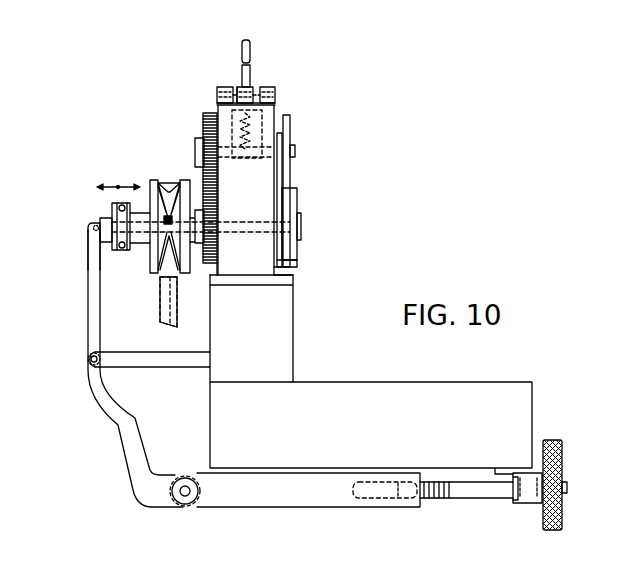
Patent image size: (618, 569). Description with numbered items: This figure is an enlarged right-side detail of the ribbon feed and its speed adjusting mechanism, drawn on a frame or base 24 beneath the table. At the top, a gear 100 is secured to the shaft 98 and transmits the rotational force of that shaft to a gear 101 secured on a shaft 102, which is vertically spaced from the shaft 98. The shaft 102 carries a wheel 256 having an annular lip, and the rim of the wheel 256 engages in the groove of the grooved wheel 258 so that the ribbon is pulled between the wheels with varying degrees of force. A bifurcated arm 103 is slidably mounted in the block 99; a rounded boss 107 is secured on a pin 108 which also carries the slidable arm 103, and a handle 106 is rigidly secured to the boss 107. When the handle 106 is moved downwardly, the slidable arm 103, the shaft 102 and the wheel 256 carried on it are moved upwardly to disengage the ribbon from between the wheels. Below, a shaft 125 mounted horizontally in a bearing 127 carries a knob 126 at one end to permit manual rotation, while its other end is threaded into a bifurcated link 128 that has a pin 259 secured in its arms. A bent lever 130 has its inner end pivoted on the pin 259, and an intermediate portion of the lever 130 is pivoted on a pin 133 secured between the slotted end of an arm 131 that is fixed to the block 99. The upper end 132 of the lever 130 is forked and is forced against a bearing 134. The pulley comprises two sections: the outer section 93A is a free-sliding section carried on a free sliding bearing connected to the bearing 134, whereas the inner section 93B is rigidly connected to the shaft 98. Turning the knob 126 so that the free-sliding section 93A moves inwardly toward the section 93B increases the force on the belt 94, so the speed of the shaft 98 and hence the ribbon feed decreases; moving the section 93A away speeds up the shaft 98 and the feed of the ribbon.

The base frame 24 is at (492, 397).
The outer section of pulley 93A is at (152, 180).
The inner section of pulley 93B is at (186, 180).
The belt 94 is at (145, 177).
The shaft 98 is at (301, 228).
The block 99 is at (255, 272).
The gear 100 is at (205, 266).
The gear 101 is at (208, 113).
The shaft 102 is at (295, 153).
The bifurcated arm 103 is at (275, 98).
The handle 106 is at (250, 52).
The rounded boss 107 is at (255, 85).
The pin 108 is at (235, 87).
The shaft 125 is at (472, 490).
The knob 126 is at (562, 522).
The bearing 127 is at (513, 504).
The bifurcated link 128 is at (280, 498).
The bent lever 130 is at (108, 392).
The arm 131 is at (168, 368).
The forked upper end of lever 132 is at (88, 238).
The pin 133 is at (83, 358).
The bearing 134 is at (107, 212).
The wheel 256 is at (292, 128).
The wheel 258 is at (297, 202).
The pin 259 is at (183, 504).